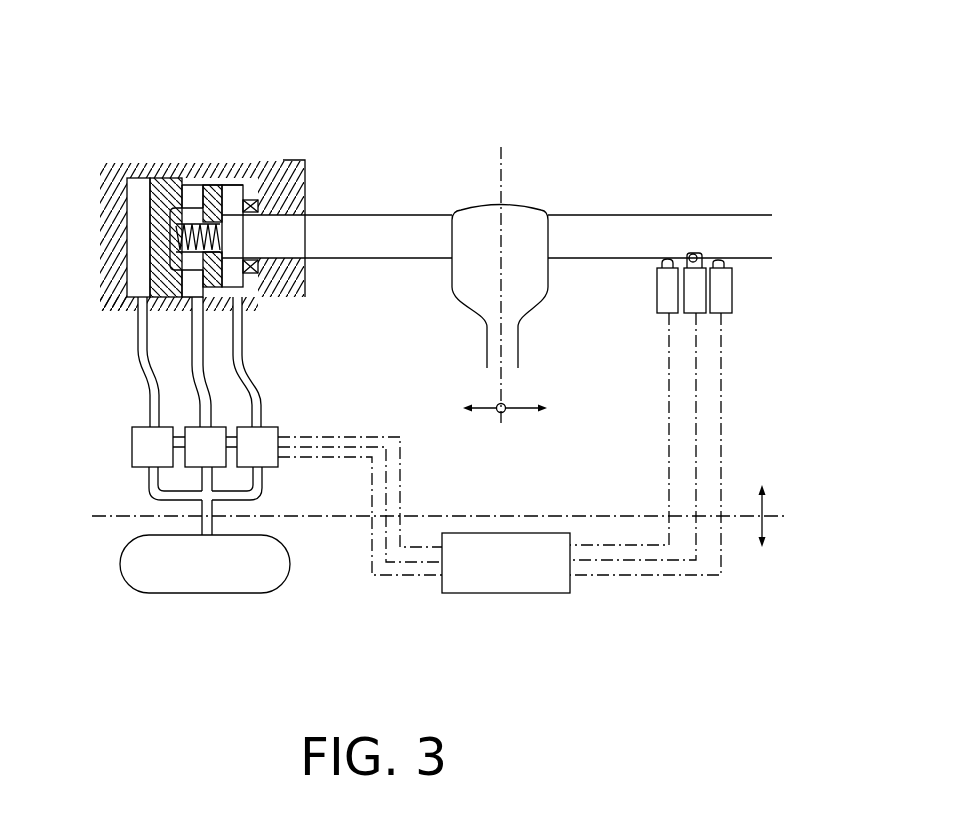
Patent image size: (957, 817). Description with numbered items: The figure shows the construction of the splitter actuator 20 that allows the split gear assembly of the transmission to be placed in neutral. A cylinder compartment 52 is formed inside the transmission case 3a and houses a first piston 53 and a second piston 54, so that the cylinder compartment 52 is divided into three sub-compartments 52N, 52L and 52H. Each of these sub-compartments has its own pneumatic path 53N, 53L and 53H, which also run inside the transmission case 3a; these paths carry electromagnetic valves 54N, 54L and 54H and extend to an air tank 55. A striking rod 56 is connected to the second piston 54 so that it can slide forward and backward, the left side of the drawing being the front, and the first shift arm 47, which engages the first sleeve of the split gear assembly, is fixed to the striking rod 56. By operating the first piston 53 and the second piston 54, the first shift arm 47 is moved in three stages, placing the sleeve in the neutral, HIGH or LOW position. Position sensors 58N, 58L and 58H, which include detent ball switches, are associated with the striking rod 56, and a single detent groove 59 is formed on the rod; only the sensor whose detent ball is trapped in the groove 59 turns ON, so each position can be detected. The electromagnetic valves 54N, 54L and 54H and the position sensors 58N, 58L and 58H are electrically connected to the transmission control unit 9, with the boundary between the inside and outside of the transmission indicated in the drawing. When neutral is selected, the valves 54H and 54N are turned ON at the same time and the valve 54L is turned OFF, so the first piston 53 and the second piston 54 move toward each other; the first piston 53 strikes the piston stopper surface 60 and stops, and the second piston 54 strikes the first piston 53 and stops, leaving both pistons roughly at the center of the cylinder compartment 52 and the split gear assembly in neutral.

The splitter actuator 20 is at (380, 87).
The transmission case 3a is at (287, 165).
The cylinder compartment 52 is at (133, 180).
The neutral sub-compartment 52N is at (138, 228).
The LOW sub-compartment 52L is at (193, 185).
The HIGH sub-compartment 52H is at (238, 185).
The first piston 53 is at (165, 180).
The second piston 54 is at (224, 185).
The piston stopper surface 60 is at (188, 185).
The striking rod 56 is at (377, 230).
The first shift arm 47 is at (493, 343).
The detent groove 59 is at (684, 256).
The HIGH position sensor 58H is at (667, 287).
The neutral position sensor 58N is at (695, 307).
The LOW position sensor 58L is at (725, 302).
The neutral pneumatic path 53N is at (138, 320).
The LOW pneumatic path 53L is at (190, 327).
The HIGH pneumatic path 53H is at (237, 322).
The neutral electromagnetic valve 54N is at (147, 448).
The LOW electromagnetic valve 54L is at (188, 428).
The HIGH electromagnetic valve 54H is at (277, 424).
The air tank 55 is at (163, 577).
The transmission control unit 9 is at (492, 580).